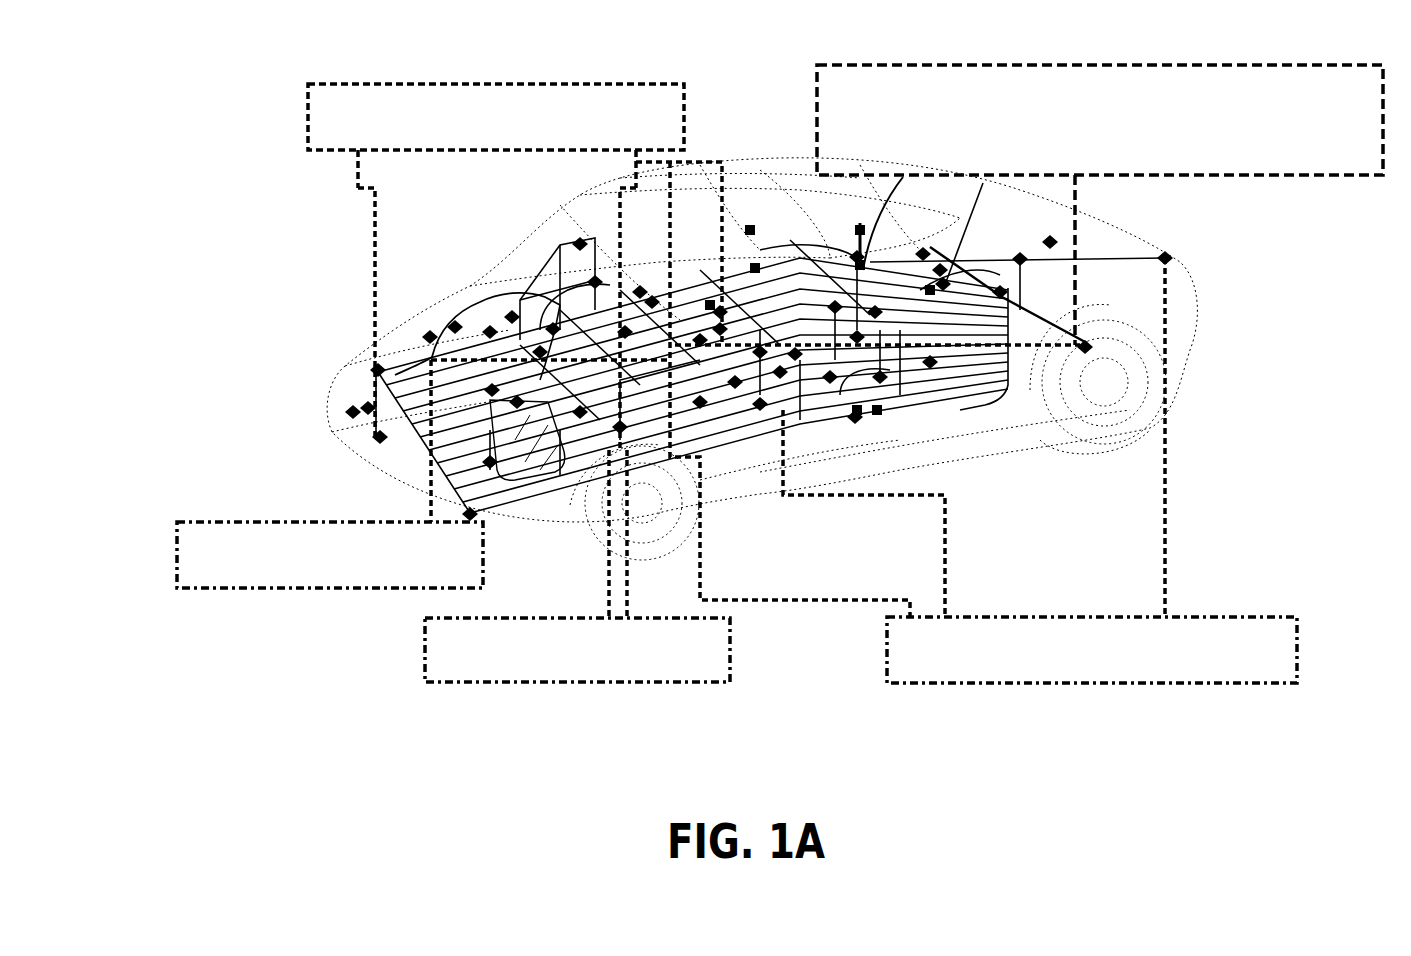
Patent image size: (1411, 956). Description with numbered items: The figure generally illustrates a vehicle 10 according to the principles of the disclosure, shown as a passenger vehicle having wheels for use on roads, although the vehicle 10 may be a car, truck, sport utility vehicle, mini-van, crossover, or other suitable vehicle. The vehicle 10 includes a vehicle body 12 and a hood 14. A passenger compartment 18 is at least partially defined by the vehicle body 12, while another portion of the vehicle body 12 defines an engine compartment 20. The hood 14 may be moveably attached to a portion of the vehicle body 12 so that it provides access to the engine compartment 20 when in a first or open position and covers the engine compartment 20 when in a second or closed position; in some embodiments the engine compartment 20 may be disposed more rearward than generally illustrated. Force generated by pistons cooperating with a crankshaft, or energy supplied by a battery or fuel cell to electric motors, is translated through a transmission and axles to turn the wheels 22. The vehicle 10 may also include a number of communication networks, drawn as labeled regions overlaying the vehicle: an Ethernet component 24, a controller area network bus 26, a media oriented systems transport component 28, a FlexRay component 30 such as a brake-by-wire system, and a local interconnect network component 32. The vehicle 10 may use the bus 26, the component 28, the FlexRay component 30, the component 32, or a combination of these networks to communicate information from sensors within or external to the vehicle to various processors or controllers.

The vehicle 10 is at (120, 155).
The vehicle body 12 is at (762, 388).
The hood 14 is at (465, 298).
The passenger compartment 18 is at (634, 240).
The engine compartment 20 is at (348, 346).
The wheels 22 is at (585, 498).
The Ethernet component 24 is at (160, 535).
The controller area network (CAN) bus 26 is at (297, 92).
The media oriented systems transport component (MOST) 28 is at (830, 50).
The FlexRay component 30 is at (400, 650).
The local interconnect network component (LIN) 32 is at (870, 660).